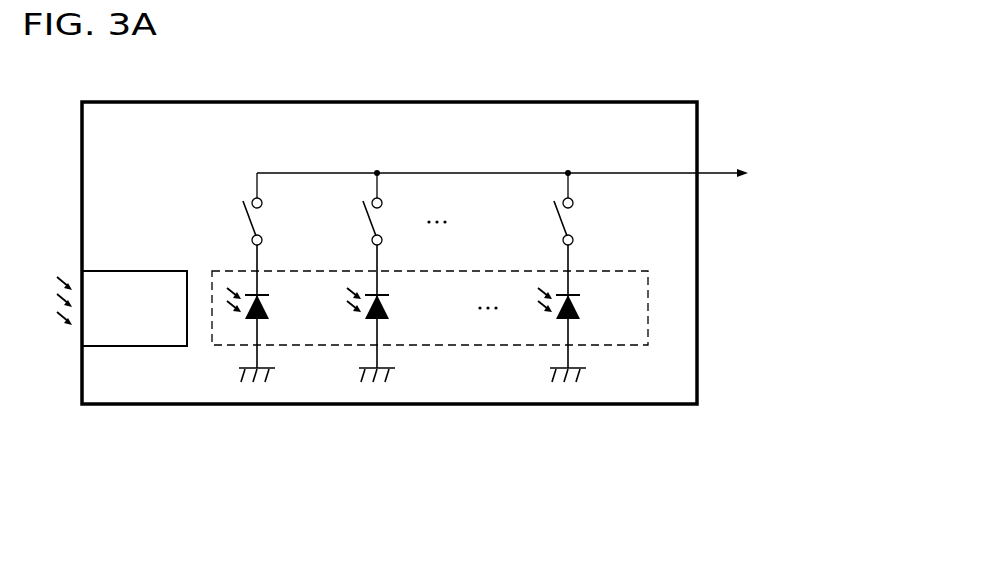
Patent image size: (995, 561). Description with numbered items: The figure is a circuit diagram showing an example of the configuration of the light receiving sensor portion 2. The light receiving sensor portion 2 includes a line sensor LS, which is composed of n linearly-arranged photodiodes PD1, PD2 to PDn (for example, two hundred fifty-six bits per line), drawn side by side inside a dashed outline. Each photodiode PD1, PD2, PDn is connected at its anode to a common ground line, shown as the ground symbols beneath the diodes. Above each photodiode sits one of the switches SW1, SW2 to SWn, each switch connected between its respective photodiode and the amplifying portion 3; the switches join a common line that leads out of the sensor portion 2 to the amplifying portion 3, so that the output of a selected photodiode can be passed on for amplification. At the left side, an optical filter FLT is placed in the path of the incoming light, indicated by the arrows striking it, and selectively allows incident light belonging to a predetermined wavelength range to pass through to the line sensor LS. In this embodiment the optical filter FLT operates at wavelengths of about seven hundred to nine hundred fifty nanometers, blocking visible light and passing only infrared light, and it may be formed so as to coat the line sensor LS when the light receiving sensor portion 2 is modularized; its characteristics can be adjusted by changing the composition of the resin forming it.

The light receiving sensor portion 2 is at (390, 101).
The amplifying portion 3 is at (573, 187).
The optical filter FLT is at (138, 270).
The line sensor LS is at (627, 270).
The switch SW1 is at (247, 223).
The switch SW2 is at (366, 223).
The switch SWn is at (558, 223).
The photodiode PD1 is at (269, 307).
The photodiode PD2 is at (389, 307).
The photodiode PDn is at (580, 307).